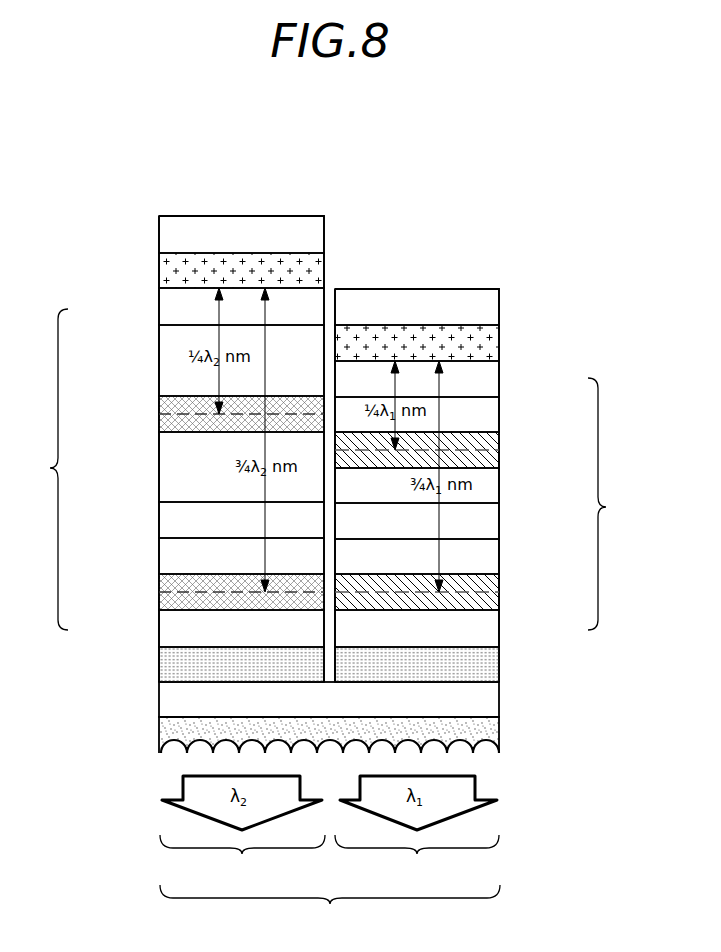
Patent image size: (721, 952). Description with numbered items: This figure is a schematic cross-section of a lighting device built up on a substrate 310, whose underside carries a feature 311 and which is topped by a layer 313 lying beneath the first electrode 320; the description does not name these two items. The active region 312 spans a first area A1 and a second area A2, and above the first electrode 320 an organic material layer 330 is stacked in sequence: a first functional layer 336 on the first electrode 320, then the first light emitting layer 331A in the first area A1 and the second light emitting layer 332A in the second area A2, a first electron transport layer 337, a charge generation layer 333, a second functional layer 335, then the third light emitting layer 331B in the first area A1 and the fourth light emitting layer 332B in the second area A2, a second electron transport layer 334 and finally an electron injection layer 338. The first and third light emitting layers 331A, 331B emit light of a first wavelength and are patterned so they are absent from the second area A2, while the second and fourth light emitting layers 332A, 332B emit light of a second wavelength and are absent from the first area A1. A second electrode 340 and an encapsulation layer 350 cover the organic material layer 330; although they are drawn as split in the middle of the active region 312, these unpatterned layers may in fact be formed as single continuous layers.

The substrate 310 is at (499, 737).
The light extraction pattern on substrate bottom 311 is at (490, 766).
The active region 312 is at (330, 906).
The buffer layer 313 is at (499, 698).
The first electrode 320 is at (159, 662).
The organic material layer 330 is at (329, 469).
The first light emitting layer 331A is at (499, 597).
The third light emitting layer 331B is at (499, 455).
The second light emitting layer 332A is at (159, 597).
The fourth light emitting layer 332B is at (159, 424).
The charge generation layer 333 is at (159, 522).
The second electron transport layer 334 is at (159, 357).
The second functional layer 335 is at (159, 466).
The first functional layer 336 is at (159, 627).
The first electron transport layer 337 is at (159, 553).
The electron injection layer 338 is at (159, 307).
The second electrode 340 is at (159, 268).
The encapsulation layer 350 is at (159, 234).
The first area A1 is at (417, 855).
The second area A2 is at (242, 855).